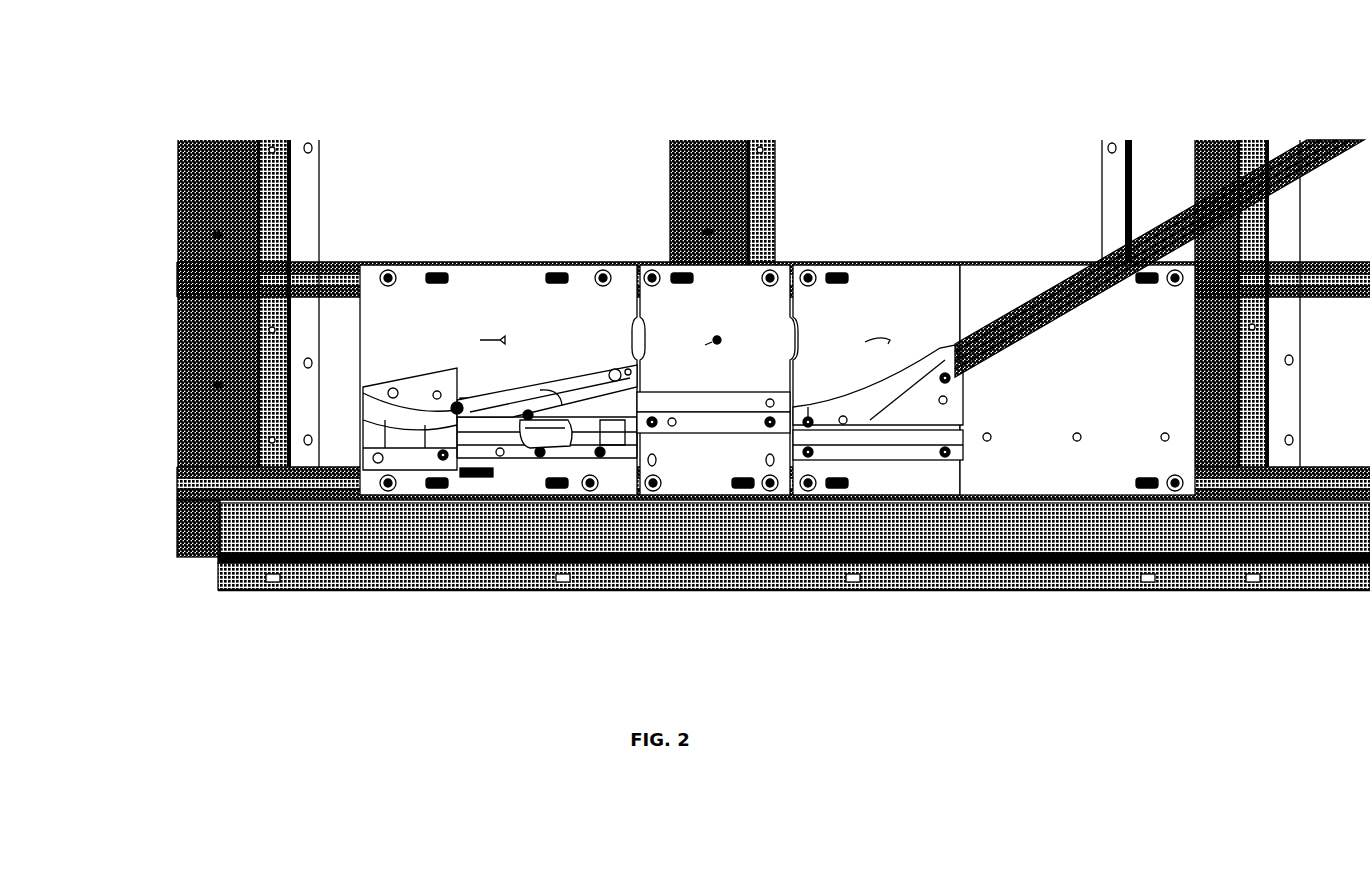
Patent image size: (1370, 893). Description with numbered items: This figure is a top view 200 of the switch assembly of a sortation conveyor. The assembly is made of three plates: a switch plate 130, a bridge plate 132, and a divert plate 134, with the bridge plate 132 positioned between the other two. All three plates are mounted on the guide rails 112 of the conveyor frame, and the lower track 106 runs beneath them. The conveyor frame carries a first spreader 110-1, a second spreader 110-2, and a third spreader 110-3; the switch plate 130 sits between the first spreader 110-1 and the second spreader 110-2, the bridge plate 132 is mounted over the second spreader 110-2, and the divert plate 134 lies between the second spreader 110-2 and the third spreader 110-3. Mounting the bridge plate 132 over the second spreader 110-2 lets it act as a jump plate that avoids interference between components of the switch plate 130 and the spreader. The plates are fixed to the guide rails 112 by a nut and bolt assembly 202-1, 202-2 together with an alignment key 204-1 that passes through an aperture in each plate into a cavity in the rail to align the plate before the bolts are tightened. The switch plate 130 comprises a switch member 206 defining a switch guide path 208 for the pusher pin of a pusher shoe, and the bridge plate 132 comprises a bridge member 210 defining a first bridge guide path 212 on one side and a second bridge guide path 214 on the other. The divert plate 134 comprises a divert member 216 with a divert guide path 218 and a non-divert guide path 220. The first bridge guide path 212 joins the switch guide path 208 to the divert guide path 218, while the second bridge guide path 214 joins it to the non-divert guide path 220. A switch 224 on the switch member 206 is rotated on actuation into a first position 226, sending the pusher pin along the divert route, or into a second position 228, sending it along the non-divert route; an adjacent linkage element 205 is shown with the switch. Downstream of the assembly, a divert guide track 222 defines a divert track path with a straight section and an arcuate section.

The top view 200 is at (214, 94).
The base track 106 is at (333, 577).
The first spreader 110-1 is at (320, 208).
The second spreader 110-2 is at (775, 188).
The third spreader 110-3 is at (1300, 230).
The guide rails 112 is at (190, 470).
The switch plate 130 is at (488, 486).
The bridge plate 132 is at (712, 486).
The divert plate 134 is at (1021, 472).
The nut and bolt assembly 202-1 is at (389, 268).
The nut and bolt assembly 202-2 is at (555, 268).
The alignment key 204-1 is at (436, 268).
The linkage member 205 is at (624, 445).
The switch member 206 is at (475, 378).
The switch guide path 208 is at (587, 392).
The bridge member 210 is at (688, 380).
The first bridge guide path 212 is at (728, 402).
The second bridge guide path 214 is at (708, 420).
The divert member 216 is at (848, 382).
The divert guide path 218 is at (907, 378).
The non-divert guide path 220 is at (897, 437).
The divert guide track 222 is at (1067, 320).
The switch 224 is at (543, 448).
The first position 226 is at (562, 448).
The second position 228 is at (562, 405).